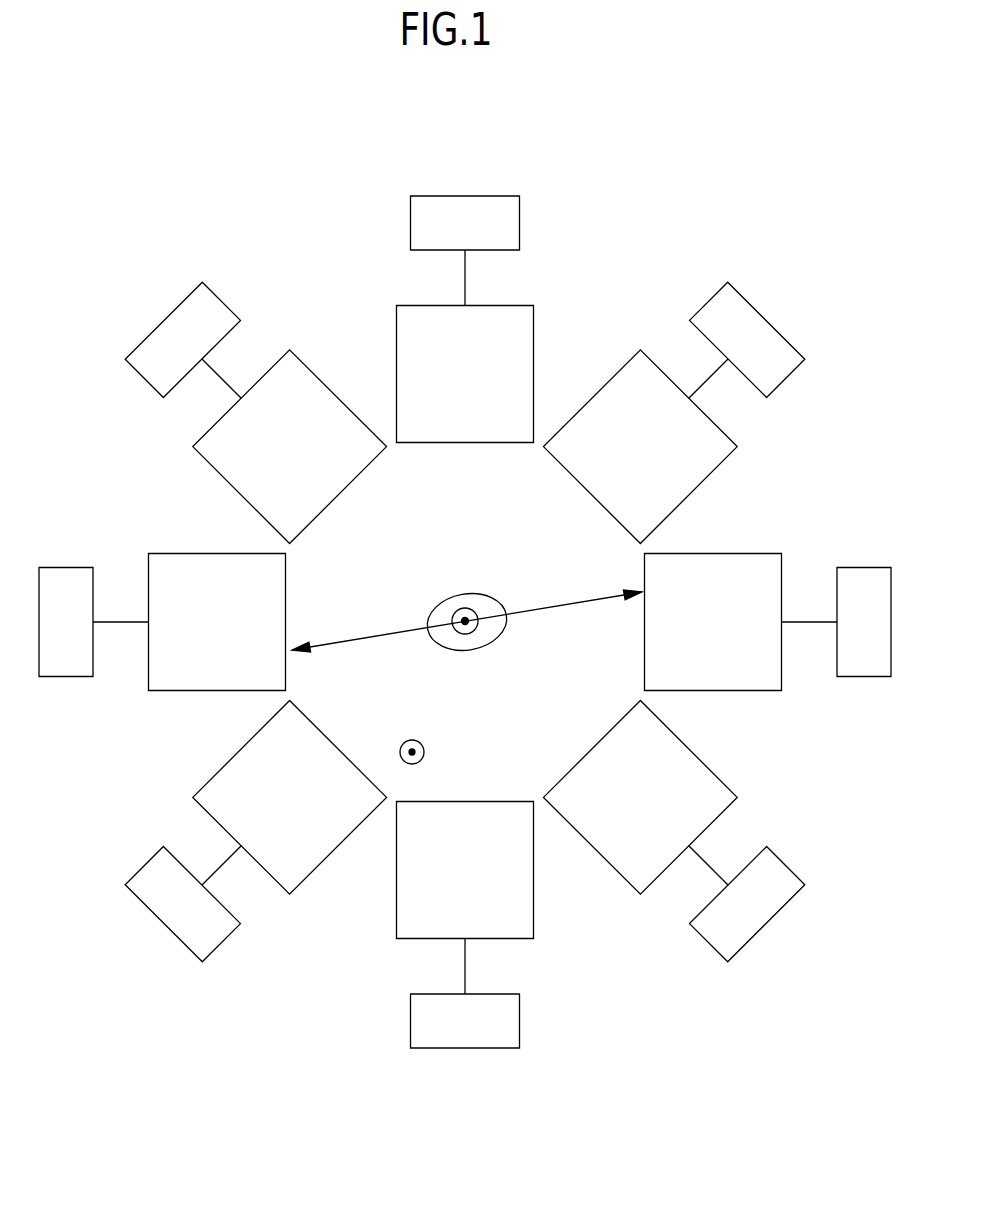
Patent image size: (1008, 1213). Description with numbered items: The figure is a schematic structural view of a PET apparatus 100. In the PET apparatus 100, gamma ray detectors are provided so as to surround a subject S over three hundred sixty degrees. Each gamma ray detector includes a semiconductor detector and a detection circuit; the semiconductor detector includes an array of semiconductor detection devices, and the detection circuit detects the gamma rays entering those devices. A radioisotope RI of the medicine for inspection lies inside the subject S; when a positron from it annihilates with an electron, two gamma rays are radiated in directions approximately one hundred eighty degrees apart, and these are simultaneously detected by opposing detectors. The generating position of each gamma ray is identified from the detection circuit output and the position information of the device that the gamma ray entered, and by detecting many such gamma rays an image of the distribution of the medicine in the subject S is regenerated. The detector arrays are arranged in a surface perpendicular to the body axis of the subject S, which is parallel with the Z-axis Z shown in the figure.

The PET apparatus 100 is at (82, 157).
The subject S is at (493, 595).
The radioisotope RI is at (477, 632).
The Z-axis Z is at (417, 767).